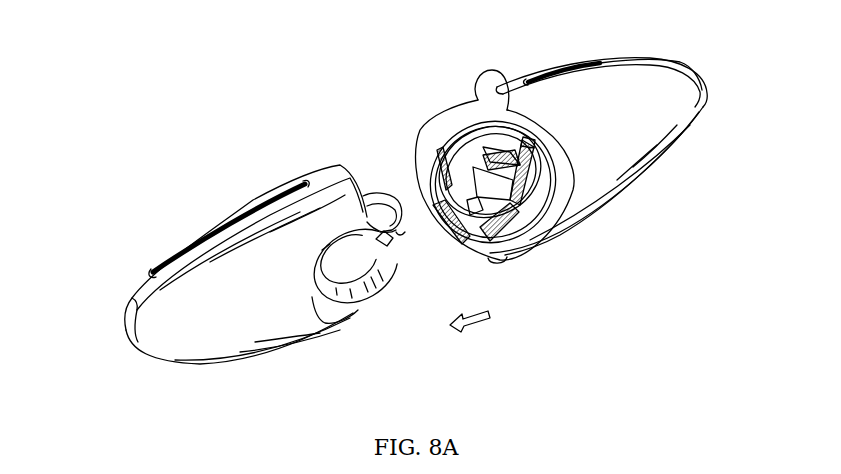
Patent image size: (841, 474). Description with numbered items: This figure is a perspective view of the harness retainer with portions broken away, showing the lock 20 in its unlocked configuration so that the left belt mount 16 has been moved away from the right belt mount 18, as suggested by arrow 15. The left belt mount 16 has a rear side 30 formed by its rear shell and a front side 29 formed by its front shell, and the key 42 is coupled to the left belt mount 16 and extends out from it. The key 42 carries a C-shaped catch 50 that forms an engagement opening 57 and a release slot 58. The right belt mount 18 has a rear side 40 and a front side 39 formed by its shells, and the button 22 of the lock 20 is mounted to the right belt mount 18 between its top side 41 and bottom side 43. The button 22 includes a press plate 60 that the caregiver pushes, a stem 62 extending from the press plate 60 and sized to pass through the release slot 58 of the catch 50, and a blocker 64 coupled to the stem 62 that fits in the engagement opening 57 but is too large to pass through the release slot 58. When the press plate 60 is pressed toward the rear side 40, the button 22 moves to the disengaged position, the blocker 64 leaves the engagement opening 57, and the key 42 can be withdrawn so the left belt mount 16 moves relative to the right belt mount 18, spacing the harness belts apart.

The arrow 15 is at (486, 320).
The left belt mount 16 is at (100, 287).
The right belt mount 18 is at (728, 70).
The lock 20 is at (458, 252).
The button 22 is at (526, 218).
The front side 29 is at (233, 335).
The rear side 30 is at (180, 250).
The front side 39 is at (647, 140).
The rear side 40 is at (545, 77).
The top side 41 is at (606, 63).
The key 42 is at (370, 305).
The bottom side 43 is at (636, 189).
The catch 50 is at (364, 173).
The engagement opening 57 is at (385, 214).
The release slot 58 is at (405, 232).
The press plate 60 is at (553, 186).
The stem 62 is at (481, 160).
The blocker 64 is at (505, 131).